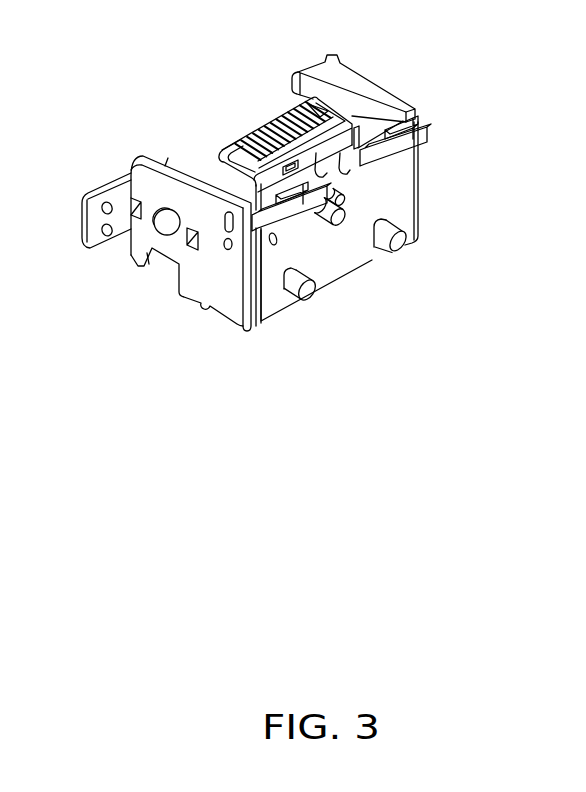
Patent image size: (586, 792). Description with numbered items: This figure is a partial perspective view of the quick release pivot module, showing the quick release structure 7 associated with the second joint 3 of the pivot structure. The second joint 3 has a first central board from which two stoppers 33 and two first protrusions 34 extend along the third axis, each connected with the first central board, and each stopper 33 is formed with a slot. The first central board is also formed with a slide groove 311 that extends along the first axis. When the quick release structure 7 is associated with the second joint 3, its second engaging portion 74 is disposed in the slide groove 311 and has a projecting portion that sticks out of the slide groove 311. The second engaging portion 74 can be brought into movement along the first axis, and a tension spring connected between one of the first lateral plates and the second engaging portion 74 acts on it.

The quick release structure 7 is at (213, 70).
The second joint 3 is at (377, 91).
The stopper 33 is at (423, 129).
The slide groove 311 is at (337, 195).
The first protrusion 34 is at (399, 252).
The second engaging portion 74 is at (334, 227).